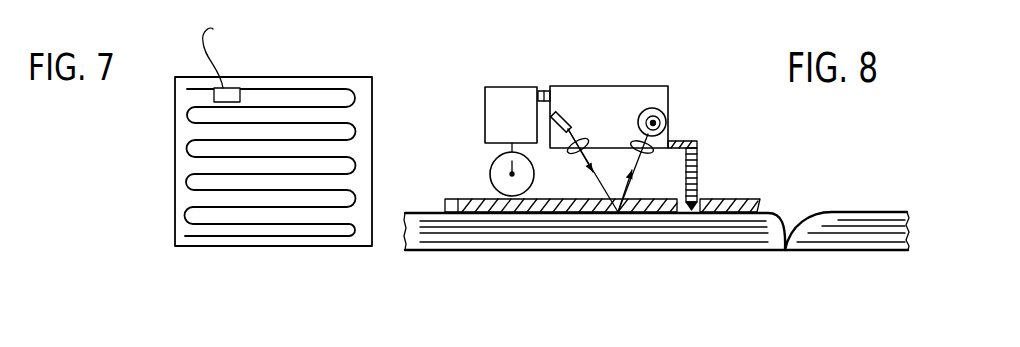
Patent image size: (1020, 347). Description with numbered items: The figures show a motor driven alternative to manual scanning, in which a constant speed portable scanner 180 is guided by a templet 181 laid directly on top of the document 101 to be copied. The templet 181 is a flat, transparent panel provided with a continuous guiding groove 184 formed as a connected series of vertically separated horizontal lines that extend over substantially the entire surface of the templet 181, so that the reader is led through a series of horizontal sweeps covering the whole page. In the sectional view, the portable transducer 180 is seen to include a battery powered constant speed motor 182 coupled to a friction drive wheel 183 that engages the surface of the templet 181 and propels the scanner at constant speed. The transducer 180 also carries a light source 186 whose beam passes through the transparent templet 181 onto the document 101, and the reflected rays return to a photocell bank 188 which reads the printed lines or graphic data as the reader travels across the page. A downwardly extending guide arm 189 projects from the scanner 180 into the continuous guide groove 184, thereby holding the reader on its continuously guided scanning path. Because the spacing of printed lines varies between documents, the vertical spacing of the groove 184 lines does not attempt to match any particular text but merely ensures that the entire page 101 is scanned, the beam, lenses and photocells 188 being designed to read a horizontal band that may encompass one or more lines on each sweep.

In FIG. 8, the document 101 is at (673, 235).
In FIG. 7, the portable scanner 180 is at (234, 83).
In FIG. 8, the portable scanner 180 is at (542, 83).
In FIG. 7, the templet 181 is at (364, 96).
In FIG. 8, the templet 181 is at (727, 207).
In FIG. 8, the constant speed motor 182 is at (485, 103).
In FIG. 8, the friction drive wheel 183 is at (490, 170).
In FIG. 7, the guiding groove 184 is at (352, 138).
In FIG. 8, the guiding groove 184 is at (697, 203).
In FIG. 8, the light source 186 is at (557, 113).
In FIG. 8, the photocell bank 188 is at (646, 116).
In FIG. 8, the guide arm 189 is at (690, 145).